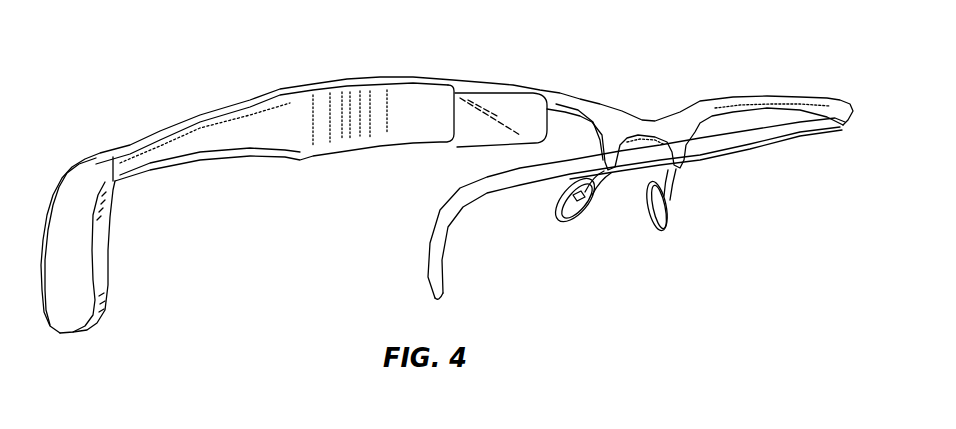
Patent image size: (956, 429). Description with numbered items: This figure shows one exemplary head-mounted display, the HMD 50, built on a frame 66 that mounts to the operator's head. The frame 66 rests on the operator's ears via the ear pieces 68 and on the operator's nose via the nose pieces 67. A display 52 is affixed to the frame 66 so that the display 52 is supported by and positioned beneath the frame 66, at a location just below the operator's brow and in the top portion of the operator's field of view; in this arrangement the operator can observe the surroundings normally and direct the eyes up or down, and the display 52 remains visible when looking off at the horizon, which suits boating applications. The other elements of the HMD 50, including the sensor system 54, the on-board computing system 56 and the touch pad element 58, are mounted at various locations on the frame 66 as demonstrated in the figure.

The head-mounted display 50 is at (198, 68).
The display 52 is at (518, 110).
The sensor system 54 is at (125, 162).
The on-board computing system 56 is at (75, 258).
The touch pad element 58 is at (170, 153).
The frame 66 is at (818, 100).
The nose pieces 67 is at (677, 188).
The ear pieces 68 is at (58, 187).